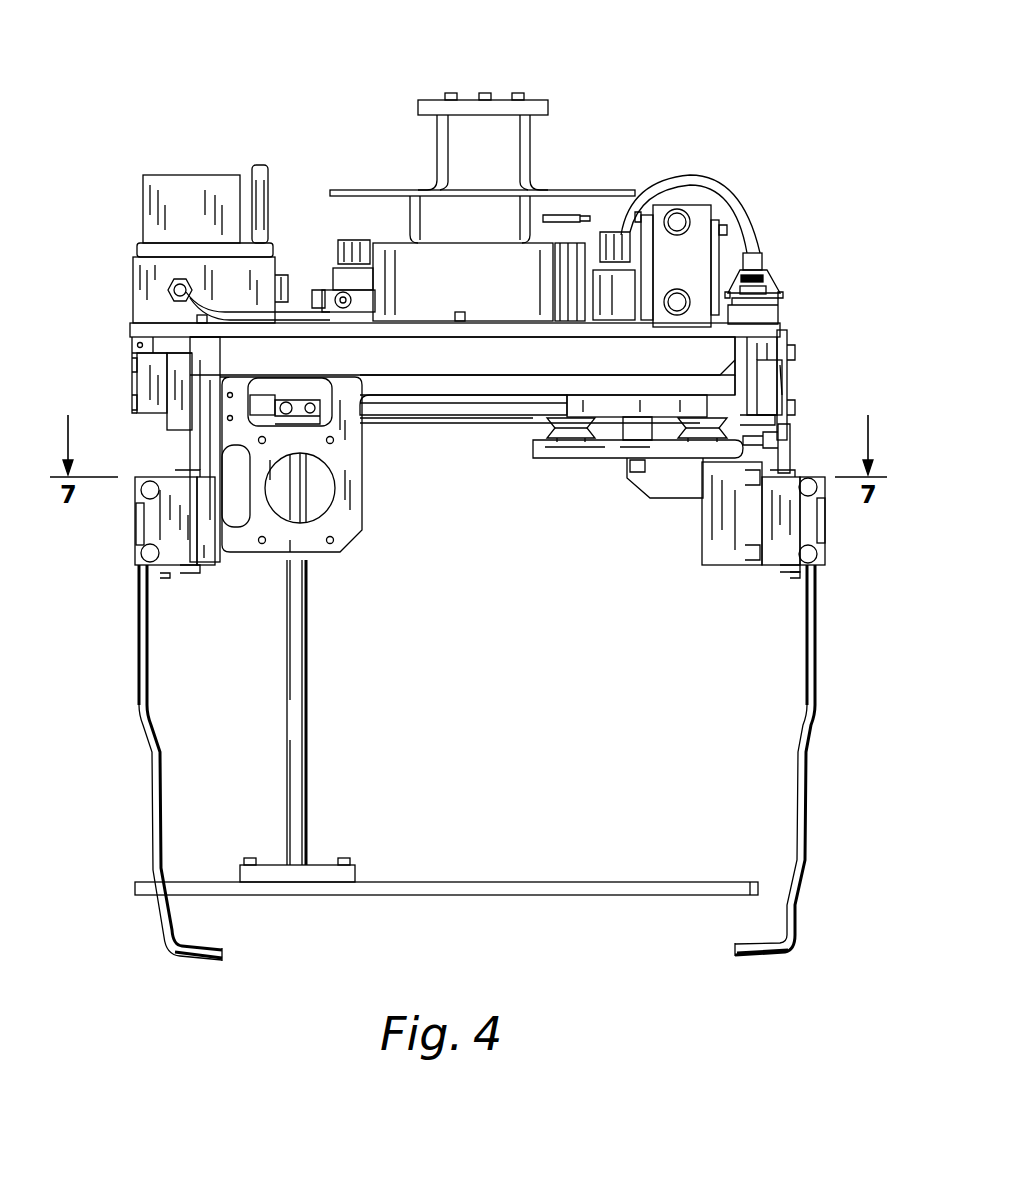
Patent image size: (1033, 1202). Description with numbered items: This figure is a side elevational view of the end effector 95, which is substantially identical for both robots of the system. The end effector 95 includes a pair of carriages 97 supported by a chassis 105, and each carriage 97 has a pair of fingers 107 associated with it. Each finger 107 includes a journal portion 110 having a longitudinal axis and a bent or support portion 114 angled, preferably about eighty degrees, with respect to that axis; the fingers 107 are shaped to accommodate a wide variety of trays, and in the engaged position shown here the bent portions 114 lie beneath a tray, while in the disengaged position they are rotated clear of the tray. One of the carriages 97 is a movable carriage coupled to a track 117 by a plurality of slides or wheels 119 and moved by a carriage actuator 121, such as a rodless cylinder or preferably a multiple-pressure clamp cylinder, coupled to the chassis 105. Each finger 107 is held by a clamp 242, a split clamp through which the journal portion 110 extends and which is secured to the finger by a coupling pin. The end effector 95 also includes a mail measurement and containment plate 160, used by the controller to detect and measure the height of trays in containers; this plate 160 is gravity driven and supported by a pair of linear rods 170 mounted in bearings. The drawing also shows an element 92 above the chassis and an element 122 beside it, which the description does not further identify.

The end effector 95 is at (648, 78).
The tape spool 92 is at (535, 165).
The connector block with cable 122 is at (767, 270).
The chassis 105 is at (722, 338).
The carriage actuator 121 is at (690, 410).
The track 117 is at (482, 425).
The slides or wheels 119 is at (700, 440).
The clamp 242 is at (140, 540).
The carriages 97 is at (170, 570).
The journal portion 110 is at (152, 630).
The linear rods 170 is at (310, 700).
The fingers 107 is at (160, 740).
The mail measurement and containment plate 160 is at (520, 890).
The bent or support portion 114 is at (205, 945).